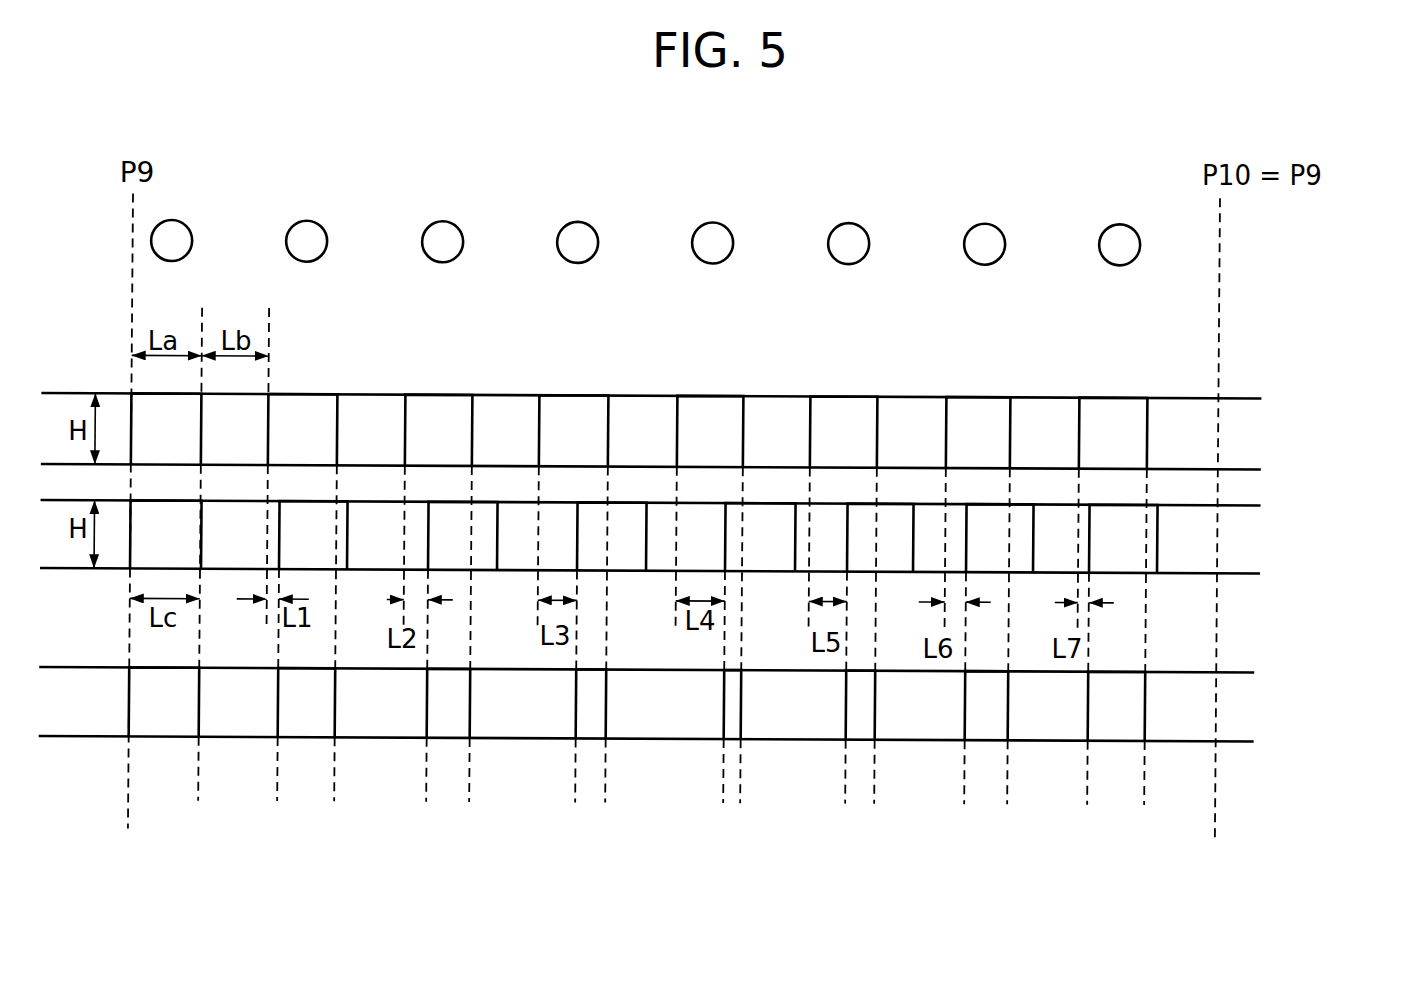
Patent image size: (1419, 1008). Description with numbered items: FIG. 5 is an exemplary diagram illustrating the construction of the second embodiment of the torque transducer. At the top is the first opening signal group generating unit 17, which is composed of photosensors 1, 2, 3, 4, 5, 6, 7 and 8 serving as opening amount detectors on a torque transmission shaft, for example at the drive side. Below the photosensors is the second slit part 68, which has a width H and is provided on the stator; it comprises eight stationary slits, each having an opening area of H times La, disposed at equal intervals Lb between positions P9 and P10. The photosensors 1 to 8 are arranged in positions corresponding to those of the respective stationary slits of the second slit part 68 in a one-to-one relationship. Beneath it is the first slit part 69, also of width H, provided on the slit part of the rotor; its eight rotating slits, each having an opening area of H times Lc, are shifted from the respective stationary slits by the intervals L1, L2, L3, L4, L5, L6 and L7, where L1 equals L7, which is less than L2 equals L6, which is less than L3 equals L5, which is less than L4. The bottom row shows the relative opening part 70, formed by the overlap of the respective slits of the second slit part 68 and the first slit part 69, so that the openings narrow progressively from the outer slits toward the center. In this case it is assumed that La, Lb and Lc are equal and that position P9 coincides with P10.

The photosensor 1 is at (177, 218).
The photosensor 2 is at (312, 218).
The photosensor 3 is at (448, 218).
The photosensor 4 is at (583, 218).
The photosensor 5 is at (718, 218).
The photosensor 6 is at (854, 218).
The photosensor 7 is at (990, 218).
The photosensor 8 is at (1125, 218).
The first opening signal group generating unit 17 is at (772, 205).
The second slit part 68 is at (1263, 434).
The first slit part 69 is at (1263, 537).
The relative opening part 70 is at (1258, 707).